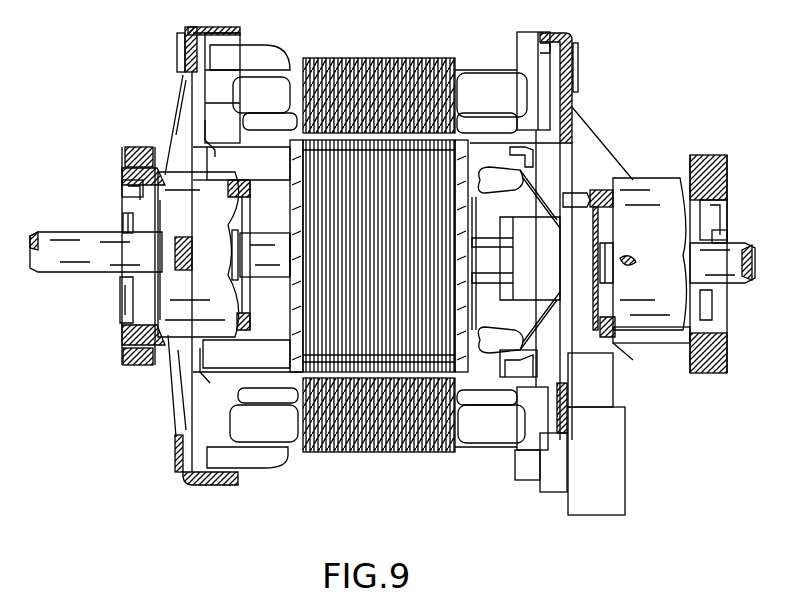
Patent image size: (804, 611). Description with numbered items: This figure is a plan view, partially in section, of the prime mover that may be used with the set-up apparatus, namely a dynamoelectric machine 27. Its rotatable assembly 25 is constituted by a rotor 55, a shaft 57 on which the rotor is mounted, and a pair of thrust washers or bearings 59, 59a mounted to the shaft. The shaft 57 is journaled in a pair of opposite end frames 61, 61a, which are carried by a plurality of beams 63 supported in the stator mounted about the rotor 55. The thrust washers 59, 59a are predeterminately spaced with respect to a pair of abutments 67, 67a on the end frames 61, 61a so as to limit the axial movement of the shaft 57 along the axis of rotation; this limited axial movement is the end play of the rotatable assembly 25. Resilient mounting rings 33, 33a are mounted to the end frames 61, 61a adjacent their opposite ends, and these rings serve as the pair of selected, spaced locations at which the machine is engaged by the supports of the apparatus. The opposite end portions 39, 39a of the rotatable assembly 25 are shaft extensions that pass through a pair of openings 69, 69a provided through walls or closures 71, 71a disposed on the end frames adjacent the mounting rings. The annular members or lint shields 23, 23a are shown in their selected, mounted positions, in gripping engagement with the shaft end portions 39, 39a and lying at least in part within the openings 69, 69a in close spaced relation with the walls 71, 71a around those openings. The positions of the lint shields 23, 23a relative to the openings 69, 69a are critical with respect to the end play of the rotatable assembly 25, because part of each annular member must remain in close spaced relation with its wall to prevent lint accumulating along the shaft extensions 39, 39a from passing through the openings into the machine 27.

The annular member 23 is at (122, 229).
The annular member 23a is at (732, 235).
The rotatable assembly 25 is at (283, 284).
The dynamoelectric machine 27 is at (605, 99).
The resilient mounting ring 33 is at (137, 147).
The resilient mounting ring 33a is at (710, 157).
The end portion 39 is at (67, 265).
The end portion 39a is at (753, 281).
The rotor 55 is at (398, 233).
The shaft 57 is at (278, 245).
The thrust washer 59 is at (220, 265).
The thrust washer 59a is at (620, 273).
The end frame 61 is at (182, 77).
The end frame 61a is at (578, 70).
The beam 63 is at (500, 67).
The abutment 67 is at (230, 225).
The abutment 67a is at (623, 230).
The opening 69 is at (120, 305).
The opening 69a is at (728, 307).
The wall 71 is at (122, 197).
The wall 71a is at (730, 207).